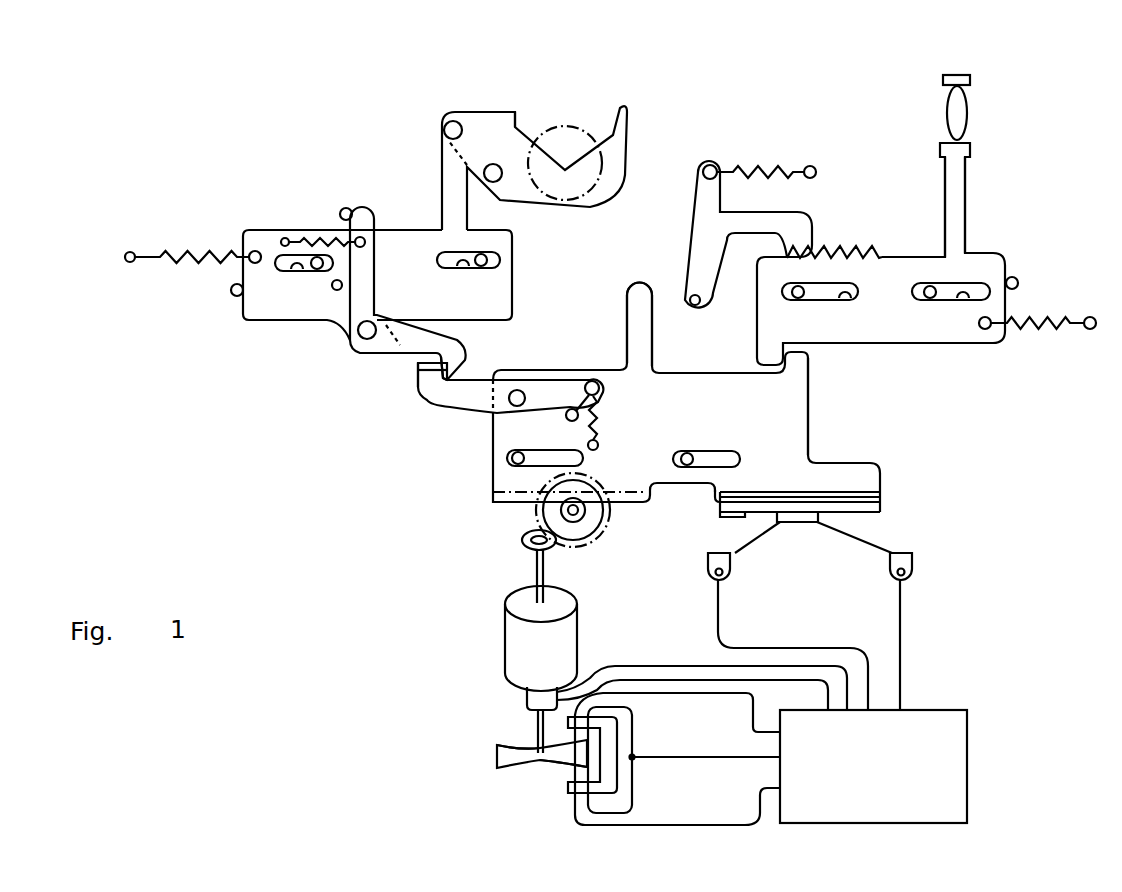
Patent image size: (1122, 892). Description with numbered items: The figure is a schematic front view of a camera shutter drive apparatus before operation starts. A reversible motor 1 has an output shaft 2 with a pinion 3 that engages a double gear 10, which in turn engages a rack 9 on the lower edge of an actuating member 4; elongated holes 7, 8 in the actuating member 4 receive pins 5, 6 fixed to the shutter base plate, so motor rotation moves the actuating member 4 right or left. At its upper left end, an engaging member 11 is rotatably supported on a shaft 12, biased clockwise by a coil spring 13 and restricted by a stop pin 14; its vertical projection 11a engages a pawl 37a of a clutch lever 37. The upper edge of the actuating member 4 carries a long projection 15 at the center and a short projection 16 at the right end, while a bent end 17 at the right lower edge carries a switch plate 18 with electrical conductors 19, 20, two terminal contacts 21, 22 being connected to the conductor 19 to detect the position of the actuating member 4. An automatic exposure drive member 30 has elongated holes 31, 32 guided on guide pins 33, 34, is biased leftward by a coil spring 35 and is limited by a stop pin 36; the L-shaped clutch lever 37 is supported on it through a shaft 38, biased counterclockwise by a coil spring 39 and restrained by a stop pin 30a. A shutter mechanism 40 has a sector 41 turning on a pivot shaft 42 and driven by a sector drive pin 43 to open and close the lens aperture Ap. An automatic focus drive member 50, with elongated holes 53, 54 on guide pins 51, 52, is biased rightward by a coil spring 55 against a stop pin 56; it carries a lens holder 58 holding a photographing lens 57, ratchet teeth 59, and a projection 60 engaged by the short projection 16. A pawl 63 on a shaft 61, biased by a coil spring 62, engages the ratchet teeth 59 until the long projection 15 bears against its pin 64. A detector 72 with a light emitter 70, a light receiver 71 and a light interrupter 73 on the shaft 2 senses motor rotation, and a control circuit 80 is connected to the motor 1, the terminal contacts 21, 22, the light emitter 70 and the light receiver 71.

The reversible motor 1 is at (523, 640).
The output shaft 2 is at (537, 567).
The pinion 3 is at (520, 540).
The actuating member 4 is at (808, 418).
The pin 5 is at (510, 463).
The pin 6 is at (688, 455).
The elongated hole 7 is at (547, 468).
The elongated hole 8 is at (725, 452).
The rack 9 is at (510, 502).
The double gear 10 is at (600, 535).
The engaging member 11 is at (567, 388).
The vertical projection 11a is at (417, 398).
The shaft 12 is at (519, 393).
The coil spring 13 is at (600, 415).
The stop pin 14 is at (588, 382).
The long projection 15 is at (625, 307).
The short projection 16 is at (808, 363).
The bent end 17 is at (880, 493).
The switch plate 18 is at (880, 508).
The electrical conductor 19 is at (795, 523).
The electrical conductor 20 is at (730, 522).
The terminal contact 21 is at (857, 547).
The terminal contact 22 is at (777, 530).
The automatic exposure drive member 30 is at (272, 228).
The stop pin 30a is at (352, 207).
The elongated hole 31 is at (297, 267).
The elongated hole 32 is at (458, 268).
The guide pin 33 is at (312, 272).
The guide pin 34 is at (490, 252).
The coil spring 35 is at (197, 250).
The stop pin 36 is at (233, 296).
The clutch lever 37 is at (370, 288).
The pawl 37a is at (433, 400).
The shaft 38 is at (358, 340).
The coil spring 39 is at (320, 238).
The shutter mechanism 40 is at (564, 88).
The sector 41 is at (515, 112).
The pivot shaft 42 is at (494, 164).
The sector drive pin 43 is at (450, 122).
The automatic focus drive member 50 is at (983, 350).
The guide pin 51 is at (800, 300).
The guide pin 52 is at (930, 300).
The elongated hole 53 is at (857, 300).
The elongated hole 54 is at (968, 300).
The coil spring 55 is at (1050, 335).
The stop pin 56 is at (1017, 278).
The photographing lens 57 is at (970, 110).
The lens holder 58 is at (966, 185).
The ratchet teeth 59 is at (848, 247).
The projection 60 is at (757, 341).
The shaft 61 is at (692, 218).
The coil spring 62 is at (766, 172).
The pawl 63 is at (798, 212).
The pin 64 is at (693, 293).
The light emitter 70 is at (527, 737).
The light receiver 71 is at (557, 772).
The detector 72 is at (545, 792).
The light interrupter 73 is at (497, 757).
The control circuit 80 is at (967, 765).
The lens aperture Ap is at (582, 135).